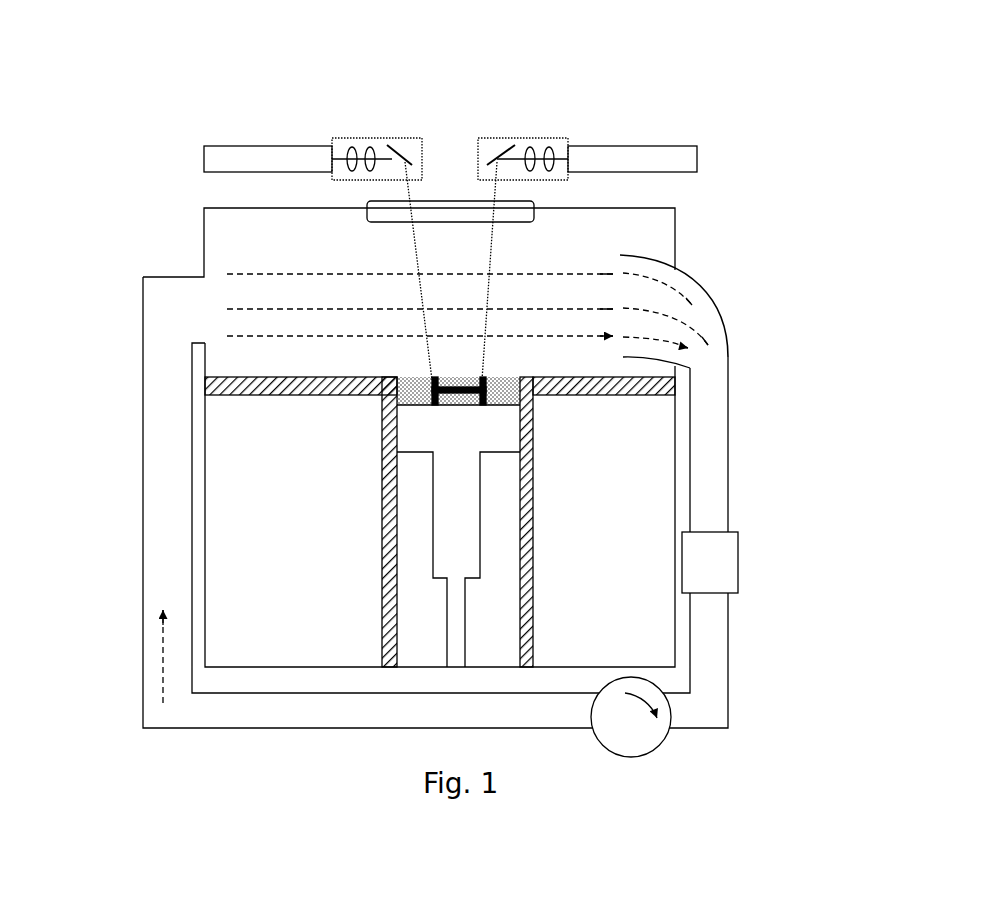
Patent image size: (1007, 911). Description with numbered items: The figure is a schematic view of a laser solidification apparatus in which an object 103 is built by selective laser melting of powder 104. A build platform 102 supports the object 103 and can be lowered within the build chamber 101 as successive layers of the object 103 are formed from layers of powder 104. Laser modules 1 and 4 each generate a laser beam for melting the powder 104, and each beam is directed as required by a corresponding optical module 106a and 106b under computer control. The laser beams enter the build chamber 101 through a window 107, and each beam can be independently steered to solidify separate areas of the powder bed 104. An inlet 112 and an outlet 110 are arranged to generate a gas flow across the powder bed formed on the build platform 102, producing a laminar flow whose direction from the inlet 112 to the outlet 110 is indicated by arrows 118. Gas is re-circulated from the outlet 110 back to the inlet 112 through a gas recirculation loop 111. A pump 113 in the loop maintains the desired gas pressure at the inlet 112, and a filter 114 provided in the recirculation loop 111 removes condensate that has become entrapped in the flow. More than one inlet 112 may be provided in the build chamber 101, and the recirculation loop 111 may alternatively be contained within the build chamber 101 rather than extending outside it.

The laser module 1 is at (204, 146).
The laser module 4 is at (682, 145).
The optical module 106a is at (343, 137).
The optical module 106b is at (505, 128).
The window 107 is at (447, 200).
The build chamber 101 is at (204, 265).
The arrows 118 is at (342, 273).
The inlet 112 is at (204, 293).
The outlet 110 is at (617, 257).
The gas recirculation loop 111 is at (730, 645).
The powder 104 is at (407, 397).
The object 103 is at (433, 407).
The build platform 102 is at (500, 428).
The filter 114 is at (738, 553).
The pump 113 is at (635, 762).